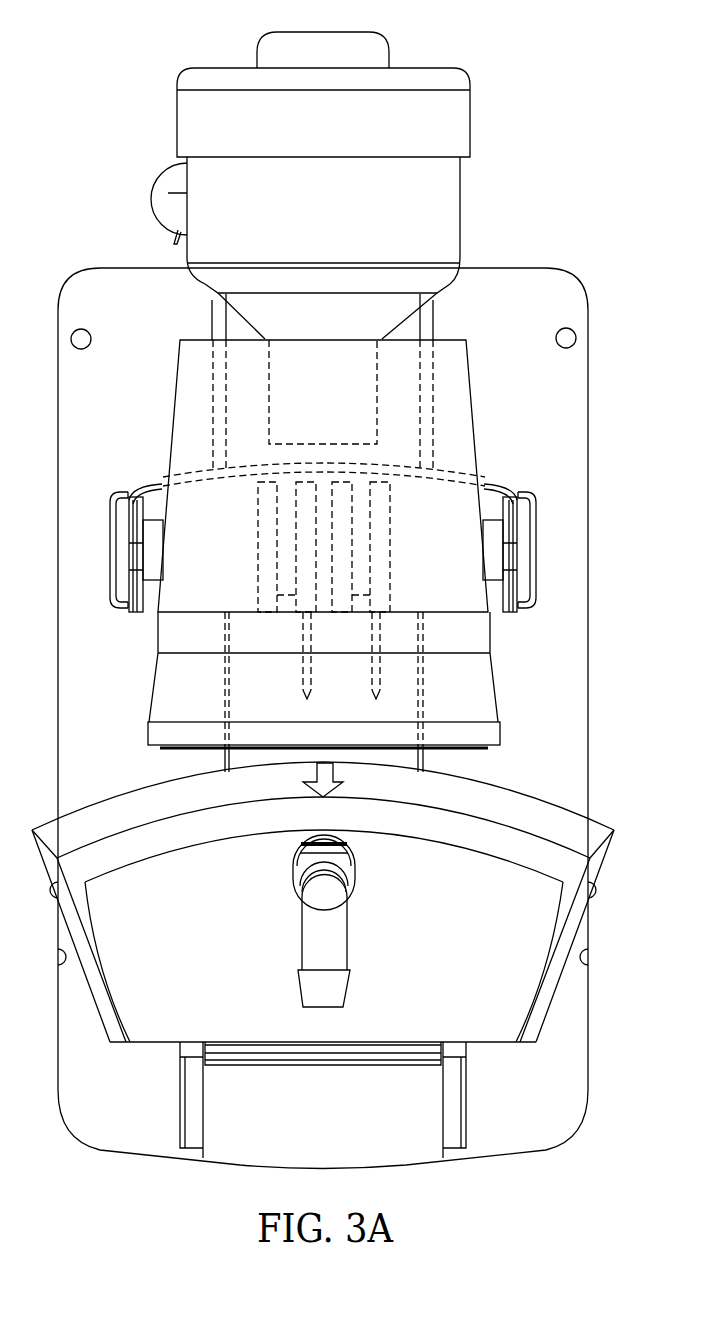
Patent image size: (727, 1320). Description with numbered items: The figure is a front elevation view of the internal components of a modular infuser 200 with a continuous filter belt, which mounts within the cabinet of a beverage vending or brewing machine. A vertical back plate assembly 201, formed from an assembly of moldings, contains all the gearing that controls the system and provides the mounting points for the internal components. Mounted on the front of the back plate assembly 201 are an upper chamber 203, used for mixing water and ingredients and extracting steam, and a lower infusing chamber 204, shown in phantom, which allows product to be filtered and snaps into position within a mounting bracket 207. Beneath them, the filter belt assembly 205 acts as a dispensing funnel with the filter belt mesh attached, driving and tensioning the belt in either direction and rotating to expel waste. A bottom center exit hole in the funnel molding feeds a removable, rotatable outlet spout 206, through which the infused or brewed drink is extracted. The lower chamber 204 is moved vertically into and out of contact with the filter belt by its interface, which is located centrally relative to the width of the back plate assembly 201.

The modular infuser 200 is at (99, 52).
The back plate assembly 201 is at (140, 268).
The upper chamber 203 is at (460, 71).
The lower chamber 204 is at (170, 413).
The filter belt assembly 205 is at (130, 790).
The outlet spout 206 is at (348, 938).
The mounting bracket 207 is at (502, 483).